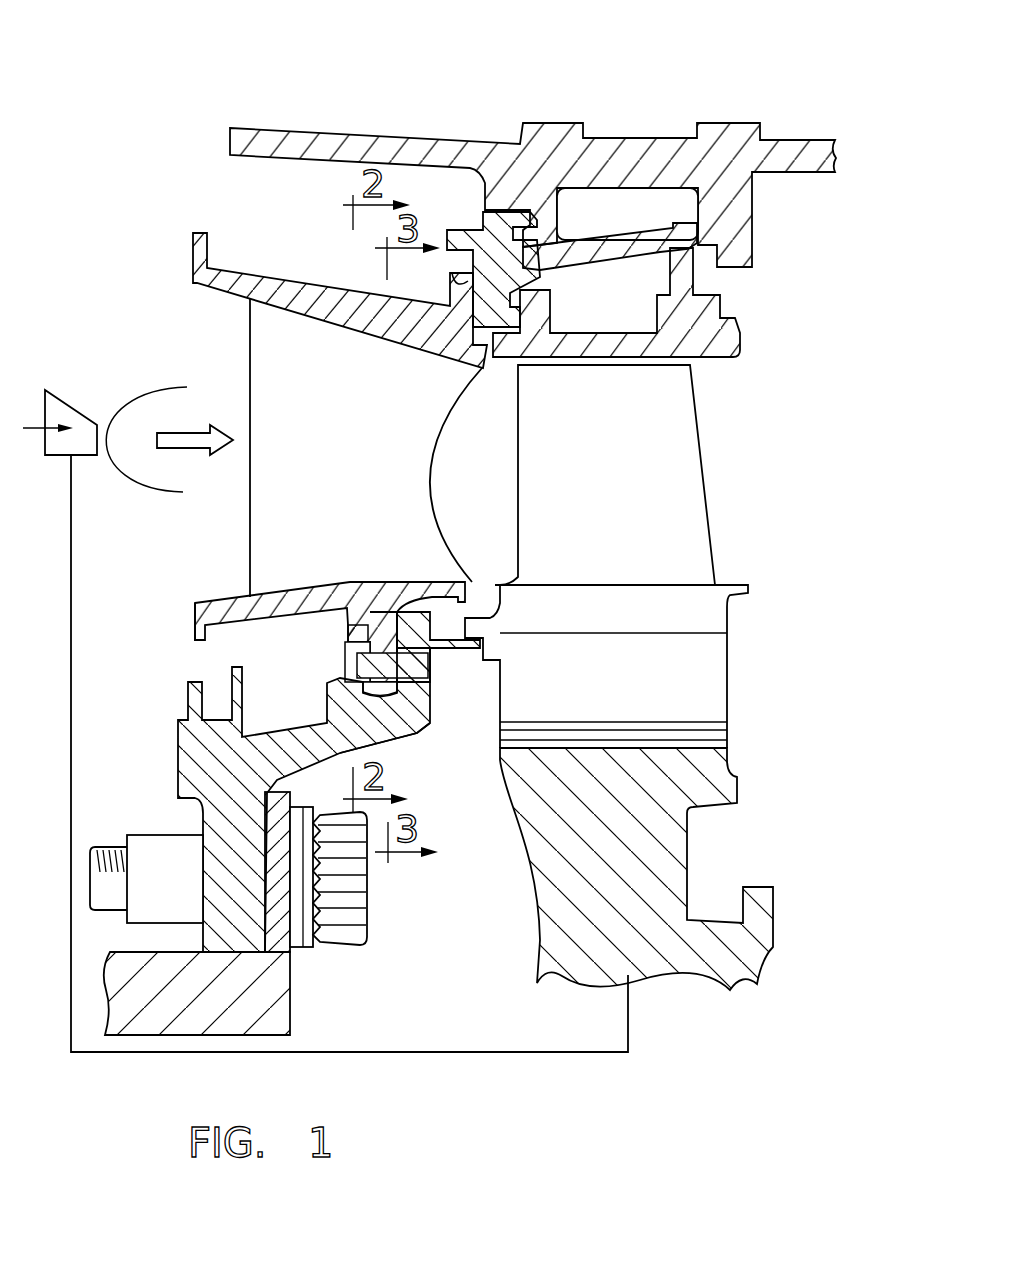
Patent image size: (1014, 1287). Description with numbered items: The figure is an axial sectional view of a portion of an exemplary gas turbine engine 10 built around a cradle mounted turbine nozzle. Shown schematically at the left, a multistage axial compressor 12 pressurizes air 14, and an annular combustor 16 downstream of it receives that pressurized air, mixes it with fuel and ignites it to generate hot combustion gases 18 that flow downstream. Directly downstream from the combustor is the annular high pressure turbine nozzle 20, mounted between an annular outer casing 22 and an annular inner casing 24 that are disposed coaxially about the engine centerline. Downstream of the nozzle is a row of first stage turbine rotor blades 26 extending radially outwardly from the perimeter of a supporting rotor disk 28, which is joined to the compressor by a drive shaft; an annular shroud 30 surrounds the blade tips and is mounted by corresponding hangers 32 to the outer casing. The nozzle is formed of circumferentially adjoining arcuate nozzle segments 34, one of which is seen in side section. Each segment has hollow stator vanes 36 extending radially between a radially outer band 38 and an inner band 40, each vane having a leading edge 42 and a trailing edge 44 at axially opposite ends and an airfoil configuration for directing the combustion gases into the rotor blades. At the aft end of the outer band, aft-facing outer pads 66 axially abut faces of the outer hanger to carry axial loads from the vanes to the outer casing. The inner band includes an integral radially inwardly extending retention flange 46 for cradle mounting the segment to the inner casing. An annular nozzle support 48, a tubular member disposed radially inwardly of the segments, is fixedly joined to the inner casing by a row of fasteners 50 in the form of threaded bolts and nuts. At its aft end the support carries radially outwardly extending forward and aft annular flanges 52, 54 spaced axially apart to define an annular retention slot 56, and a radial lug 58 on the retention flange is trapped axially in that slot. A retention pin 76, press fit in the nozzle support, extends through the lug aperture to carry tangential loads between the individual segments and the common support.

The gas turbine engine 10 is at (157, 52).
The multistage axial compressor 12 is at (66, 402).
The air 14 is at (31, 428).
The annular combustor 16 is at (147, 388).
The hot combustion gases 18 is at (168, 431).
The high pressure turbine nozzle 20 is at (298, 425).
The outer casing 22 is at (350, 166).
The inner casing 24 is at (97, 975).
The first stage turbine rotor blades 26 is at (633, 486).
The rotor disk 28 is at (634, 857).
The annular shroud 30 is at (745, 340).
The hanger 32 is at (592, 262).
The nozzle segment 34 is at (182, 637).
The stator vane 36 is at (349, 448).
The outer band 38 is at (290, 270).
The inner band 40 is at (318, 584).
The leading edge 42 is at (250, 540).
The trailing edge 44 is at (433, 490).
The retention flange 46 is at (388, 592).
The nozzle support 48 is at (269, 733).
The fasteners 50 is at (370, 905).
The forward flange 52 is at (345, 648).
The aft flange 54 is at (432, 688).
The retention slot 56 is at (424, 730).
The radial lug 58 is at (392, 695).
The outer pads 66 is at (452, 278).
The retention pin 76 is at (355, 668).